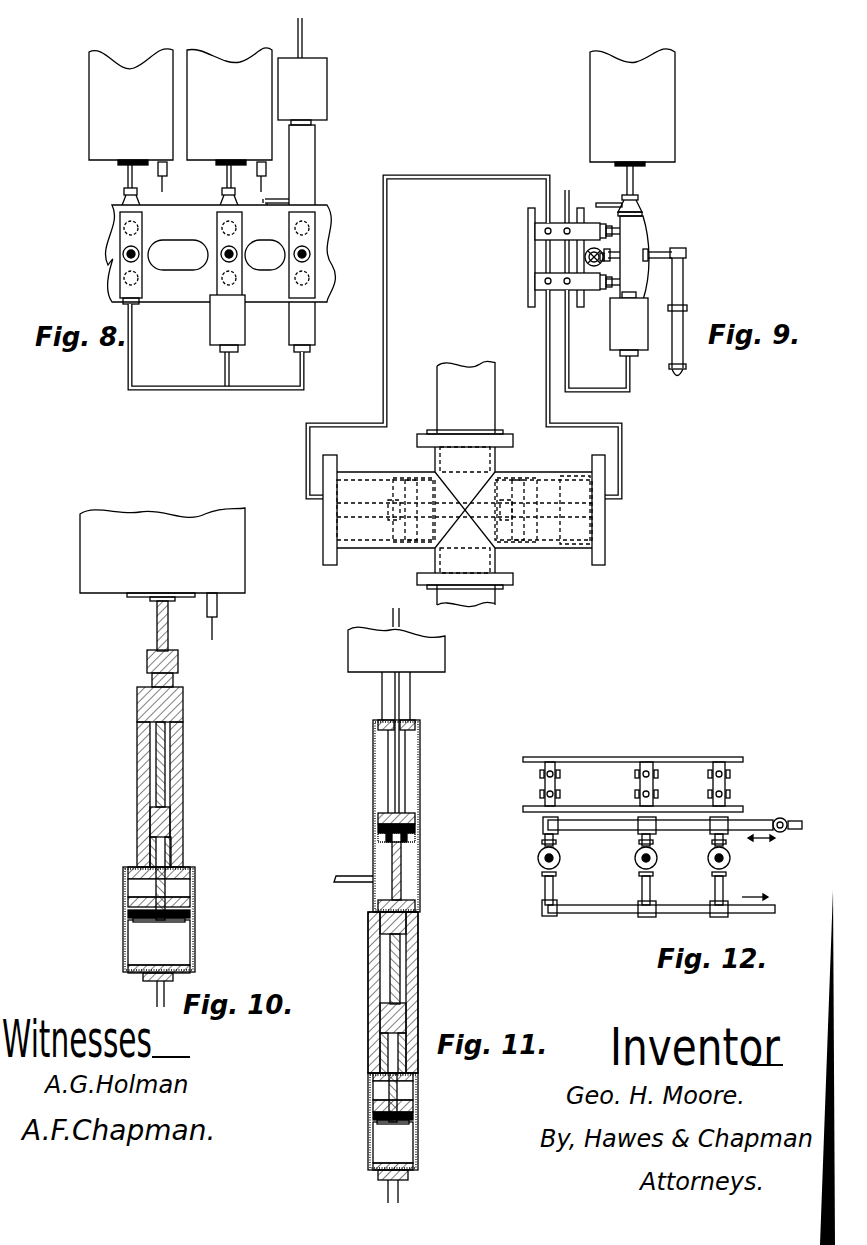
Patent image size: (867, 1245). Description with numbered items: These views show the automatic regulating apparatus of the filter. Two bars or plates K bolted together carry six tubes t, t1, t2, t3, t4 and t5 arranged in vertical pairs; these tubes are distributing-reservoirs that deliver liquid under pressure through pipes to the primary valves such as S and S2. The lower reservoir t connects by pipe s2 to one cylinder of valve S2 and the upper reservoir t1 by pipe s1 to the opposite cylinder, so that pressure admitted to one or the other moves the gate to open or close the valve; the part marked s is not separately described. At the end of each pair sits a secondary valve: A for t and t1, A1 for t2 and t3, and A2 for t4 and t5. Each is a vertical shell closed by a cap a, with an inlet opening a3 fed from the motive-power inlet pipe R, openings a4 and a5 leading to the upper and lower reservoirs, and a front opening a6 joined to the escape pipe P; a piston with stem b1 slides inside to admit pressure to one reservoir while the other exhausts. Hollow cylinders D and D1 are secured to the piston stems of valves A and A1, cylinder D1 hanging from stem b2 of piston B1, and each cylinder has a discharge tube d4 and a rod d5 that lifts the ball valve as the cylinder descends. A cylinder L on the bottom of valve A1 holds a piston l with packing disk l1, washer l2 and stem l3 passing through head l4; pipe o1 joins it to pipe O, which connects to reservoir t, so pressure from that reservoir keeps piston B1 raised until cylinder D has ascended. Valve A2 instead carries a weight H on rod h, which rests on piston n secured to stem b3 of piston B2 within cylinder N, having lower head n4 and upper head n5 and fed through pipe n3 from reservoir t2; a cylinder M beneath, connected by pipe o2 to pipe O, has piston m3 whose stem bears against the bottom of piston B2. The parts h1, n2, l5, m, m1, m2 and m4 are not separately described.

In FIG. 8, the hollow cylinder D is at (121, 104).
In FIG. 9, the hollow cylinder D is at (646, 105).
In FIG. 8, the hollow cylinder D1 is at (229, 104).
In FIG. 10, the hollow cylinder D1 is at (162, 554).
In FIG. 8, the weight H is at (313, 89).
In FIG. 11, the weight H is at (396, 649).
In FIG. 8, the rod h is at (309, 38).
In FIG. 11, the rod h is at (388, 614).
In FIG. 8, the connection h1 is at (311, 123).
In FIG. 11, the connection h1 is at (360, 816).
In FIG. 8, the cylinder N is at (315, 170).
In FIG. 9, the cylinder N is at (637, 182).
In FIG. 11, the cylinder N is at (406, 816).
In FIG. 8, the cylinder M is at (315, 330).
In FIG. 11, the cylinder M is at (380, 1121).
In FIG. 8, the piston stem b1 is at (134, 175).
In FIG. 9, the piston stem b1 is at (626, 178).
In FIG. 10, the valve stem b2 is at (167, 644).
In FIG. 11, the stem of piston B2 b3 is at (405, 871).
In FIG. 8, the tube d4 is at (167, 168).
In FIG. 10, the tube d4 is at (222, 605).
In FIG. 8, the rod d5 is at (211, 187).
In FIG. 10, the rod d5 is at (222, 630).
In FIG. 8, the cap a is at (141, 198).
In FIG. 9, the inlet opening a3 is at (621, 254).
In FIG. 9, the opening a4 is at (618, 232).
In FIG. 9, the opening a5 is at (618, 284).
In FIG. 8, the opening a6 is at (139, 250).
In FIG. 9, the opening a6 is at (657, 265).
In FIG. 11, the piston n is at (415, 816).
In FIG. 11, the packing n2 is at (415, 833).
In FIG. 8, the pipe n3 is at (266, 231).
In FIG. 9, the pipe n3 is at (606, 196).
In FIG. 11, the pipe n3 is at (345, 886).
In FIG. 11, the lower head n4 is at (418, 904).
In FIG. 11, the upper head n5 is at (415, 722).
In FIG. 8, the bars K is at (221, 263).
In FIG. 9, the bars K is at (556, 257).
In FIG. 12, the bars K is at (633, 776).
In FIG. 8, the secondary valve A is at (142, 290).
In FIG. 9, the secondary valve A is at (639, 247).
In FIG. 12, the secondary valve A is at (556, 869).
In FIG. 8, the secondary valve A1 is at (217, 280).
In FIG. 10, the secondary valve A1 is at (171, 777).
In FIG. 12, the secondary valve A1 is at (655, 869).
In FIG. 8, the secondary valve A2 is at (315, 290).
In FIG. 11, the secondary valve A2 is at (404, 992).
In FIG. 12, the secondary valve A2 is at (730, 869).
In FIG. 10, the piston B1 is at (175, 820).
In FIG. 11, the piston B2 is at (412, 1013).
In FIG. 8, the lower reservoir t is at (122, 277).
In FIG. 9, the lower reservoir t is at (557, 271).
In FIG. 12, the lower reservoir t is at (553, 784).
In FIG. 8, the upper reservoir t1 is at (122, 226).
In FIG. 9, the upper reservoir t1 is at (557, 244).
In FIG. 8, the lower reservoir t2 is at (238, 284).
In FIG. 12, the lower reservoir t2 is at (653, 784).
In FIG. 8, the upper reservoir t3 is at (236, 228).
In FIG. 8, the lower reservoir t4 is at (312, 270).
In FIG. 12, the lower reservoir t4 is at (726, 784).
In FIG. 8, the upper reservoir t5 is at (312, 222).
In FIG. 8, the cylinder L is at (234, 323).
In FIG. 9, the cylinder L is at (621, 324).
In FIG. 10, the cylinder L is at (165, 919).
In FIG. 10, the piston l is at (159, 893).
In FIG. 10, the packing disk l1 is at (133, 925).
In FIG. 10, the washer l2 is at (150, 925).
In FIG. 10, the piston stem l3 is at (159, 894).
In FIG. 10, the head l4 is at (190, 866).
In FIG. 10, the outlet l5 is at (133, 975).
In FIG. 11, the chamber m is at (405, 1090).
In FIG. 11, the valve seat m1 is at (378, 1128).
In FIG. 11, the valve m2 is at (405, 1128).
In FIG. 11, the piston m3 is at (413, 1108).
In FIG. 11, the cap m4 is at (413, 1078).
In FIG. 8, the pipe O is at (216, 355).
In FIG. 9, the pipe O is at (596, 290).
In FIG. 8, the pipe o1 is at (235, 369).
In FIG. 9, the pipe o1 is at (641, 372).
In FIG. 10, the pipe o1 is at (158, 1003).
In FIG. 8, the pipe o2 is at (313, 368).
In FIG. 9, the motive-power inlet pipe R is at (594, 266).
In FIG. 12, the motive-power inlet pipe R is at (672, 832).
In FIG. 9, the motive-power escape pipe P is at (686, 312).
In FIG. 12, the motive-power escape pipe P is at (658, 914).
In FIG. 9, the primary valve S is at (466, 483).
In FIG. 9, the steam pipe s is at (501, 603).
In FIG. 9, the primary valve S2 is at (568, 500).
In FIG. 9, the pipe s1 is at (429, 337).
In FIG. 9, the pipe s2 is at (594, 393).